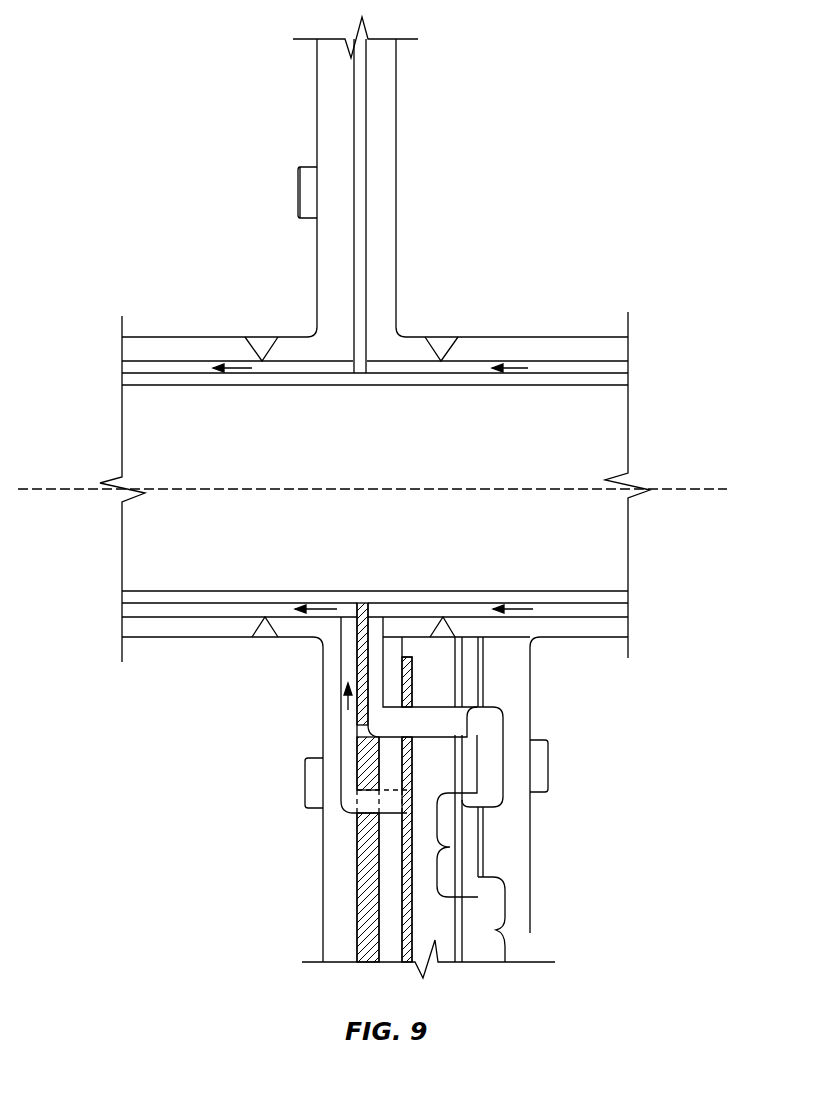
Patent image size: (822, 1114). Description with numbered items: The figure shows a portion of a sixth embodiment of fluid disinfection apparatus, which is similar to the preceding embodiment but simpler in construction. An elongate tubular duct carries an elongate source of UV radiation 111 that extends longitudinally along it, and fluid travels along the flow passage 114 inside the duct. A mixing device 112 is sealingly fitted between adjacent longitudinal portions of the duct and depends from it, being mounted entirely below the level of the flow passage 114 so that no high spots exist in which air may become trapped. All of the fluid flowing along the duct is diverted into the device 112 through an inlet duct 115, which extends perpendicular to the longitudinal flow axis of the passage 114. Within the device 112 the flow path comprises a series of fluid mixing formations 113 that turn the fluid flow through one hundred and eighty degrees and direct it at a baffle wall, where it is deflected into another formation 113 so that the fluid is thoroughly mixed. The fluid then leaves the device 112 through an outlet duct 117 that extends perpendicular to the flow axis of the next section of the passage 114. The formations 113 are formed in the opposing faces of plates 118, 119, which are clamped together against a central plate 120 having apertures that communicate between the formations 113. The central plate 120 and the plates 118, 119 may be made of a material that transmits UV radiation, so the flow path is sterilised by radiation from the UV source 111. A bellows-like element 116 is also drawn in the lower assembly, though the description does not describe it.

The source of UV radiation 111 is at (603, 506).
The mixing device 112 is at (630, 757).
The fluid mixing formations 113 is at (447, 872).
The flow passage 114 is at (157, 367).
The inlet duct 115 is at (377, 642).
The bellows 116 is at (478, 763).
The outlet duct 117 is at (348, 649).
The plate 118 is at (515, 662).
The plate 119 is at (445, 663).
The central plate 120 is at (468, 668).